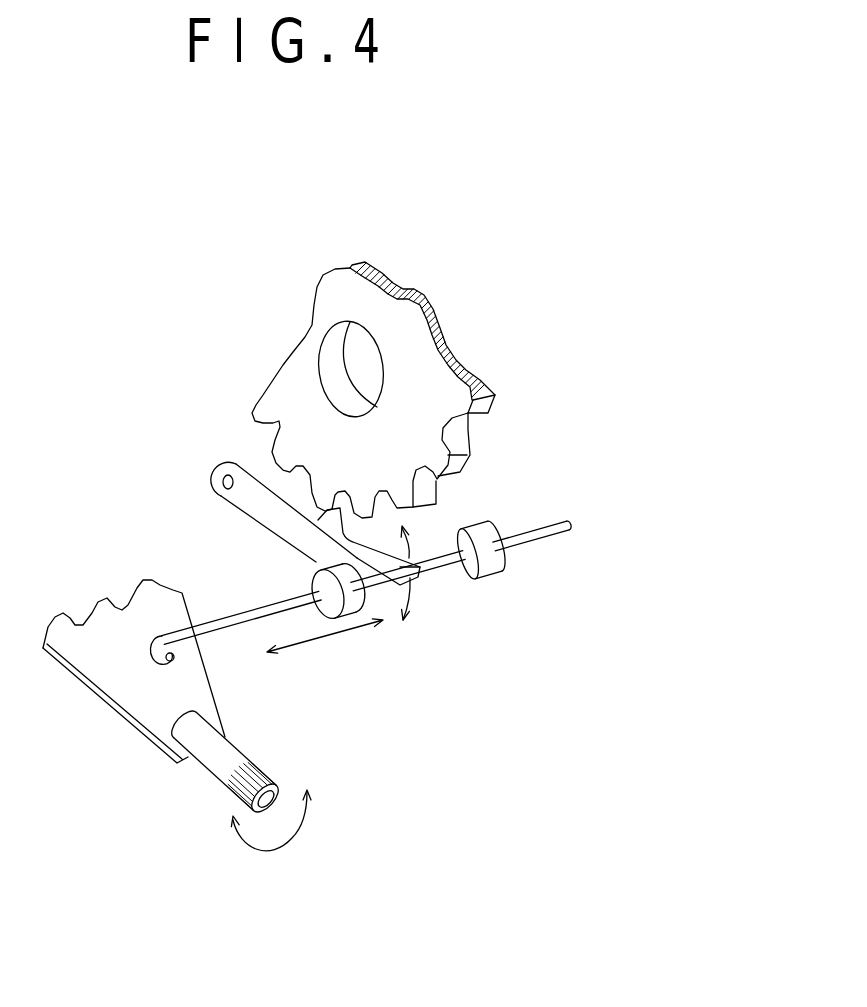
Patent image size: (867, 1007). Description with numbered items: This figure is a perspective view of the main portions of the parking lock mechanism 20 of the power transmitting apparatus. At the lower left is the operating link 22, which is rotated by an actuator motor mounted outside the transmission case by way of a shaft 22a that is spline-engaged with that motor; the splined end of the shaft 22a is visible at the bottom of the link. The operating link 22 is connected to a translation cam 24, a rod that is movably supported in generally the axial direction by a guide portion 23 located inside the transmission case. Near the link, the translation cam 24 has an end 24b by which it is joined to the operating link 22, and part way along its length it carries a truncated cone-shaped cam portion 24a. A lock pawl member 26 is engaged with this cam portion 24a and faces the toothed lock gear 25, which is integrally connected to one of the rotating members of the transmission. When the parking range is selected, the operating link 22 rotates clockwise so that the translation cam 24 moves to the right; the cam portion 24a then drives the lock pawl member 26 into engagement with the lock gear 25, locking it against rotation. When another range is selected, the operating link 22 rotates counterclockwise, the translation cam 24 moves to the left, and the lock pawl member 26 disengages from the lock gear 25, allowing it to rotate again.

The parking lock mechanism 20 is at (182, 312).
The operating link 22 is at (105, 688).
The shaft 22a is at (237, 744).
The guide portion 23 is at (498, 522).
The translation cam 24 is at (315, 577).
The truncated cone-shaped cam portion 24a is at (384, 602).
The hook portion 24b is at (250, 628).
The lock gear 25 is at (287, 421).
The lock pawl member 26 is at (243, 516).